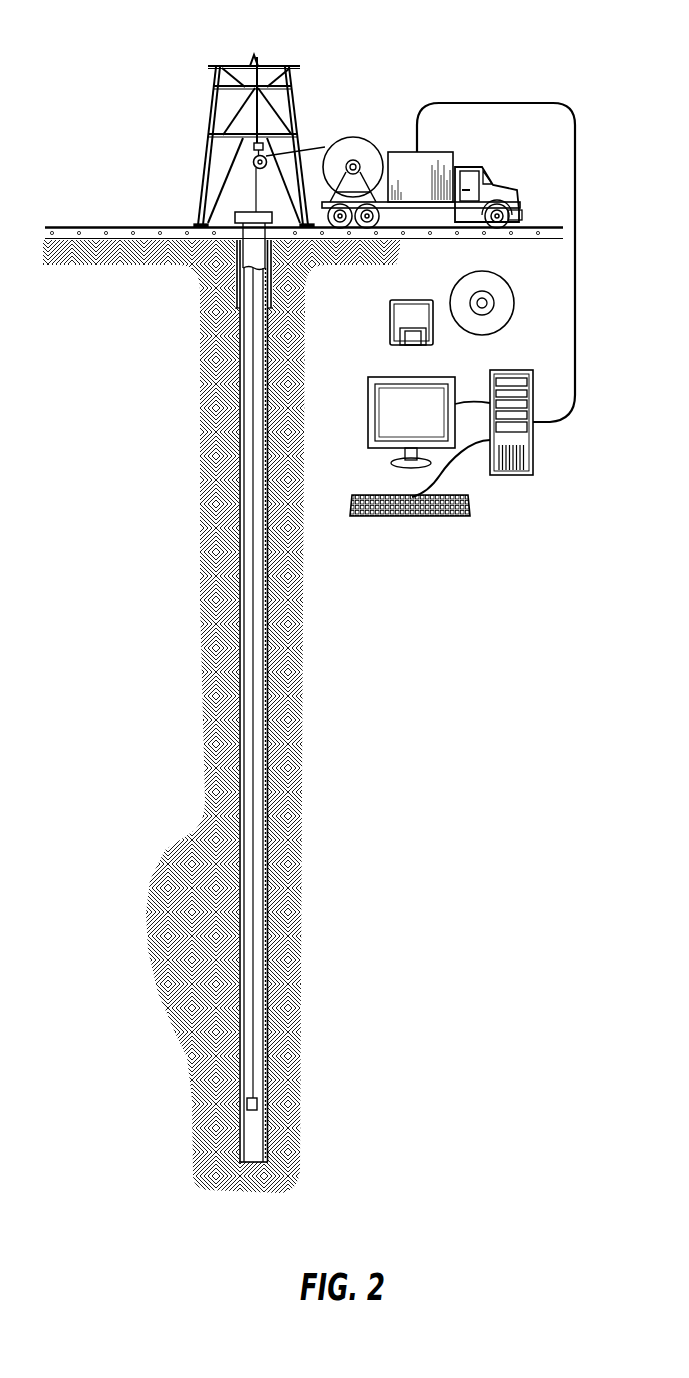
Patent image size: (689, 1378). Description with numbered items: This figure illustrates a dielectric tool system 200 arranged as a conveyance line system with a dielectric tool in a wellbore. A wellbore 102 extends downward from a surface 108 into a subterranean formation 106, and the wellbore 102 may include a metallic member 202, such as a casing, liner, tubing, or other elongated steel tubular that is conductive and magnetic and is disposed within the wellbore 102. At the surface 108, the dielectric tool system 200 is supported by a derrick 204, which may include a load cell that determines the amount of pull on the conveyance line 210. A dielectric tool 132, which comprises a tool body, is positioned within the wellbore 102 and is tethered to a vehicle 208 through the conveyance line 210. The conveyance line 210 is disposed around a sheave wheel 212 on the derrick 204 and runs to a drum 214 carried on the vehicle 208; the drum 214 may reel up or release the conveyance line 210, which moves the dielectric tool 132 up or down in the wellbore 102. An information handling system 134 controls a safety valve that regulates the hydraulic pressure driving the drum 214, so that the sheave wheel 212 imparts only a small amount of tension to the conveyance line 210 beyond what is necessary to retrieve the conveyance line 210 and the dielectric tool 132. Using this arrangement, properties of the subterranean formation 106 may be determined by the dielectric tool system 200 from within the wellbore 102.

The dielectric tool system 200 is at (462, 40).
The derrick 204 is at (212, 100).
The sheave wheel 212 is at (252, 164).
The subterranean formation 106 is at (243, 211).
The surface 108 is at (103, 227).
The drum 214 is at (351, 137).
The vehicle 208 is at (437, 152).
The wellbore 102 is at (266, 382).
The metallic member 202 is at (265, 447).
The conveyance line 210 is at (254, 523).
The dielectric tool 132 is at (257, 1104).
The information handling system 134 is at (485, 497).